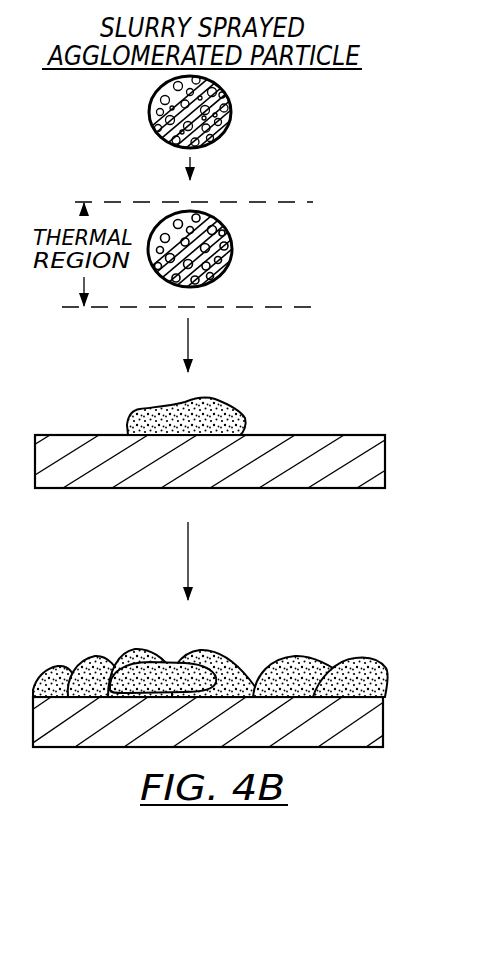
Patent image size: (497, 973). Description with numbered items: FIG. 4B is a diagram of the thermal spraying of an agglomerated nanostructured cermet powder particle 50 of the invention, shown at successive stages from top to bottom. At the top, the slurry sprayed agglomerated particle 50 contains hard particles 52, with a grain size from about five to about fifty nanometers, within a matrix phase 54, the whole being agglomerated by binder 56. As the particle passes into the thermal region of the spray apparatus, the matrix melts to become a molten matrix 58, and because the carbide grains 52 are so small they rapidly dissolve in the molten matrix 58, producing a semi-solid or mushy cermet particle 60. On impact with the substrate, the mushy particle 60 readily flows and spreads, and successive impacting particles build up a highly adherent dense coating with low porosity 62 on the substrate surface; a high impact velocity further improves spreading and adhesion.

The agglomerated cermet powder particle 50 is at (211, 115).
The hard particles 52 is at (152, 113).
The matrix phase 54 is at (223, 95).
The binder 56 is at (231, 117).
The molten matrix 58 is at (220, 253).
The mushy cermet particle 60 is at (213, 255).
The dense coating with low porosity 62 is at (220, 653).